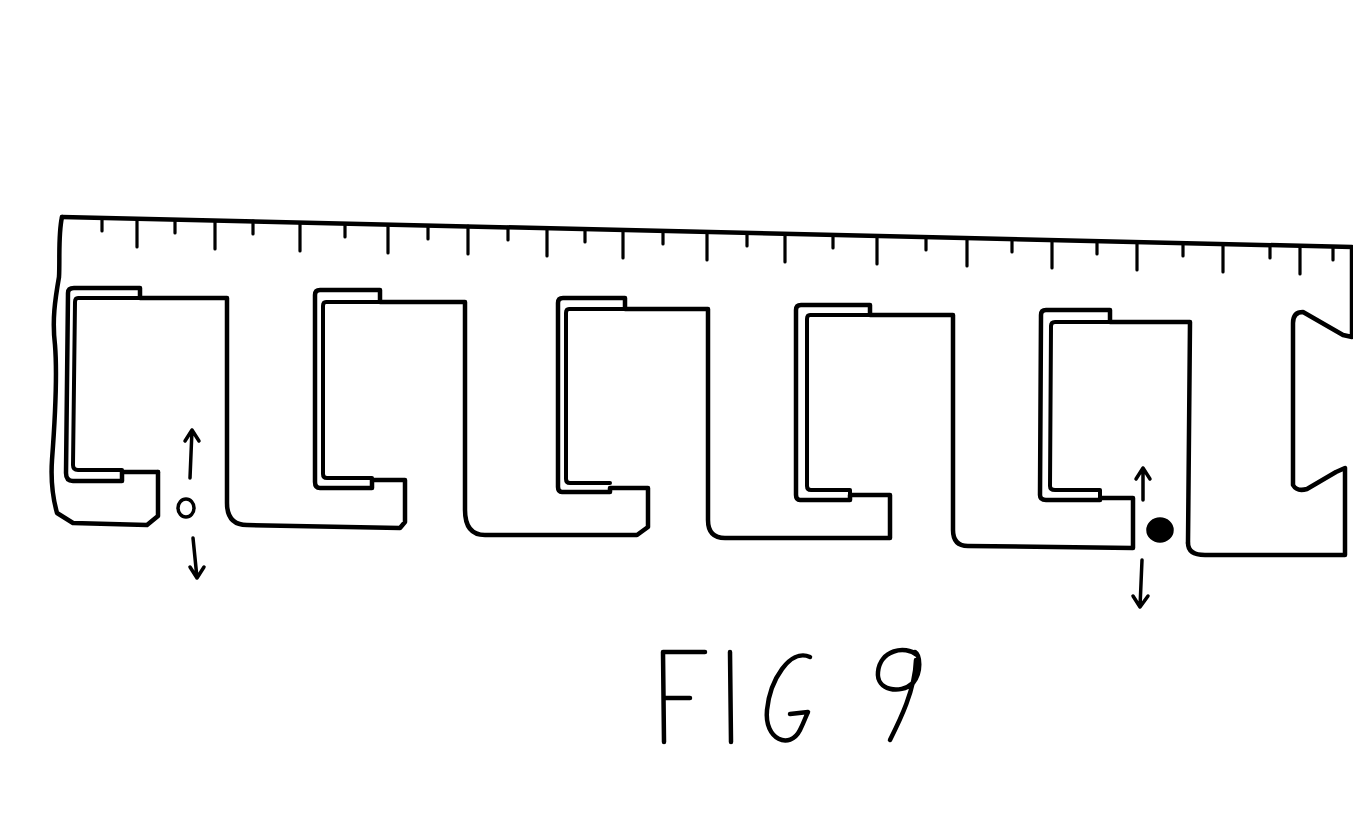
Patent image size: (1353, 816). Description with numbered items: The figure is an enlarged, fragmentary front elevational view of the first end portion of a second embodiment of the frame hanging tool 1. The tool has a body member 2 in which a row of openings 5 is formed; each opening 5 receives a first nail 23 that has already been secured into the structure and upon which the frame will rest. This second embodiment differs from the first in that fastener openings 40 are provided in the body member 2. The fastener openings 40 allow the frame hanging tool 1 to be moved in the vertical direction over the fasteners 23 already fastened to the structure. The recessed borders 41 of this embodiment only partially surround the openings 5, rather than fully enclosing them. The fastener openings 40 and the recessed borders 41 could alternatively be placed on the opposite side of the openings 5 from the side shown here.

The frame hanging tool 1 is at (1042, 108).
The body member 2 is at (558, 223).
The opening 5 is at (363, 415).
The first nail 23 is at (186, 517).
The fastener opening 40 is at (438, 500).
The recessed border 41 is at (333, 295).